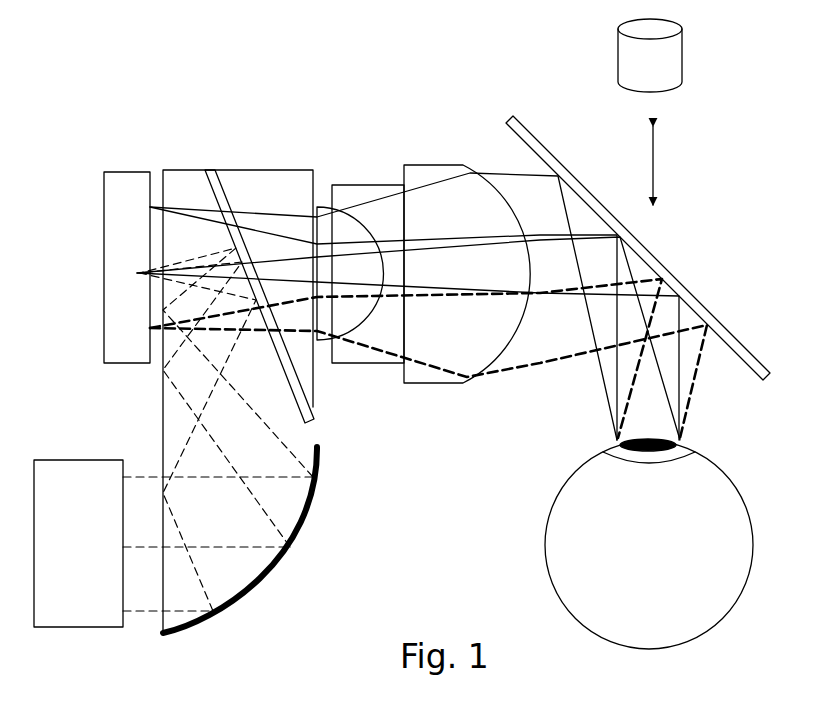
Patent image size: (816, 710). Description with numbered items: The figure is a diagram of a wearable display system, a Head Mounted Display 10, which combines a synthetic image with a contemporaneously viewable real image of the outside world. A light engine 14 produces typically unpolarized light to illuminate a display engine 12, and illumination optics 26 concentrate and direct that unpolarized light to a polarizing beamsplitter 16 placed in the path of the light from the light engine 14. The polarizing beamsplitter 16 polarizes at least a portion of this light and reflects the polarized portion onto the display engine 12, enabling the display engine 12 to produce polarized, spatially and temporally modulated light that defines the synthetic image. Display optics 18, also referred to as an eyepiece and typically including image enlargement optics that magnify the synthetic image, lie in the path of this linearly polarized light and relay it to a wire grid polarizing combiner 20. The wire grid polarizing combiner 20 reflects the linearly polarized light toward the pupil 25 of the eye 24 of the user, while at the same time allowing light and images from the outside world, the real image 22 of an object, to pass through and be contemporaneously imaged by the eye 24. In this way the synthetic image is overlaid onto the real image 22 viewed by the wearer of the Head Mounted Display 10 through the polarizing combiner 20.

The Head Mounted Display 10 is at (373, 128).
The display engine 12 is at (101, 219).
The light engine 14 is at (90, 556).
The polarizing beamsplitter 16 is at (207, 167).
The display optics 18 is at (379, 368).
The wire grid polarizing combiner 20 is at (689, 278).
The real image 22 is at (665, 72).
The eye 24 is at (661, 582).
The pupil 25 is at (702, 462).
The illumination optics 26 is at (277, 583).